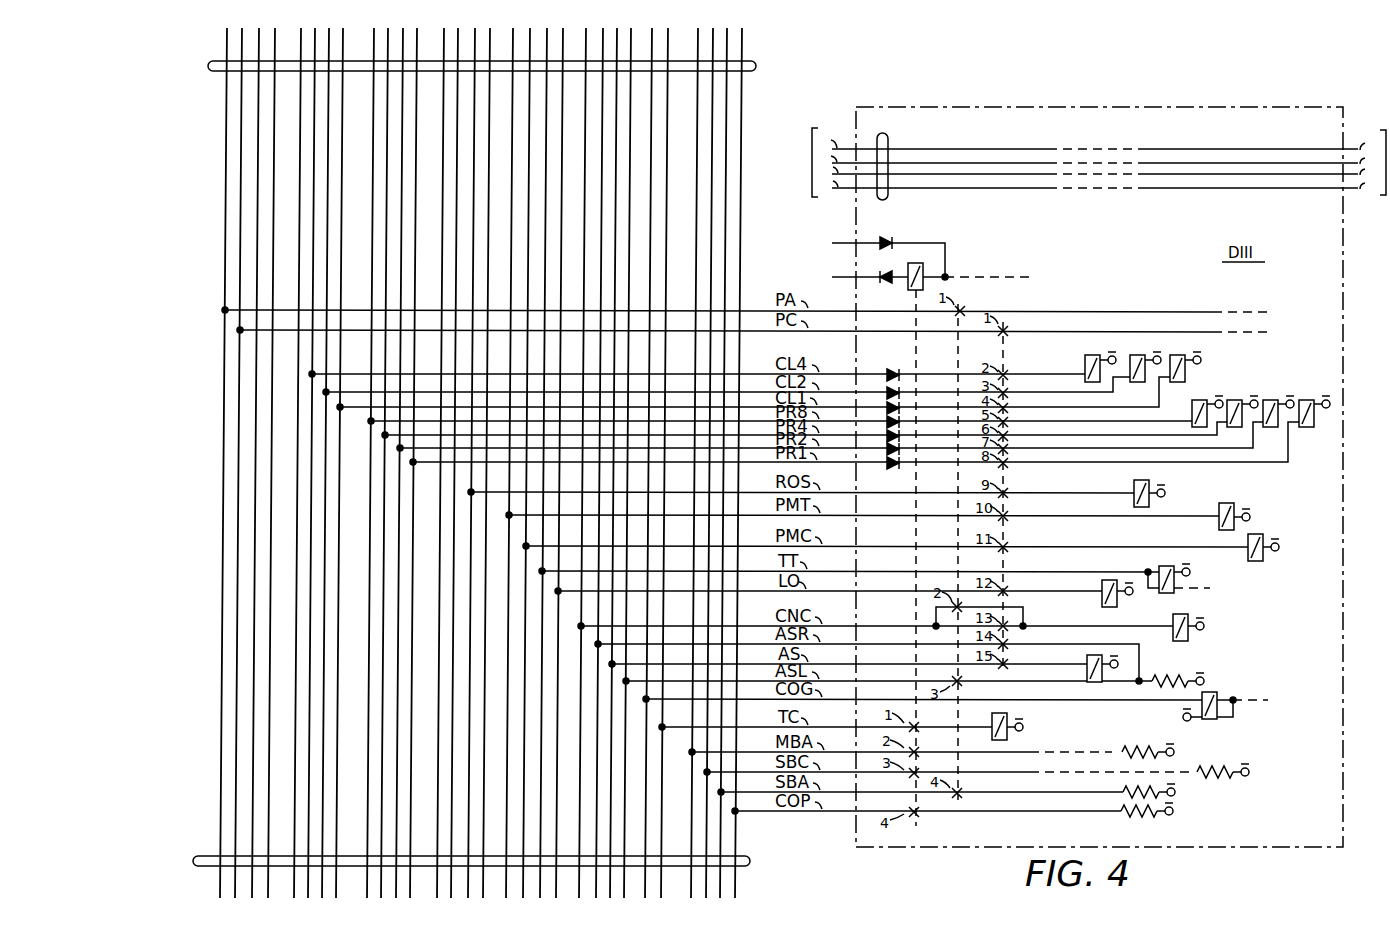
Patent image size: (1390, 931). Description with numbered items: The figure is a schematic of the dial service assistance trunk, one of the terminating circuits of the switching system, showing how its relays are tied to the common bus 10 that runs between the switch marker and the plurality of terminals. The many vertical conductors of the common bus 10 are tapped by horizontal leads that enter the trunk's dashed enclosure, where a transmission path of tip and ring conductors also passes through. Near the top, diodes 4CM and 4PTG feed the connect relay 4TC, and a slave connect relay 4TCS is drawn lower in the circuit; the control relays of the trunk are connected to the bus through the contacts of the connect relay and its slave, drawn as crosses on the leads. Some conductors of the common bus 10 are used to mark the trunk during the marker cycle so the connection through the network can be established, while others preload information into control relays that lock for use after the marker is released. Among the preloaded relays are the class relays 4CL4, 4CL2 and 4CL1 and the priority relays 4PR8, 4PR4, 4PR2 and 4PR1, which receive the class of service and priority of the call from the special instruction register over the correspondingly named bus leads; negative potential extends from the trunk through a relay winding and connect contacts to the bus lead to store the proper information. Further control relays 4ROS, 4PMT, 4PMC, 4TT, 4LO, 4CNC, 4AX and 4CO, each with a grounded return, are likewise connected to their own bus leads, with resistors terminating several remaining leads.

The common bus 10 is at (216, 62).
The diode 4CM is at (832, 243).
The diode 4PTG is at (832, 277).
The connect relay 4TC is at (922, 272).
The control relay 4AX is at (952, 356).
The class relay 4CL4 is at (1090, 356).
The class relay 4CL2 is at (1136, 357).
The class relay 4CL1 is at (1184, 357).
The priority relay 4PR8 is at (1194, 405).
The priority relay 4PR4 is at (1249, 371).
The priority relay 4PR2 is at (1272, 400).
The priority relay 4PR1 is at (1304, 400).
The control relay 4ROS is at (1137, 482).
The control relay 4PMT is at (1230, 504).
The control relay 4PMC is at (1260, 536).
The control relay 4TT is at (1160, 568).
The control relay 4LO is at (1102, 590).
The control relay 4CNC is at (1190, 618).
The control relay 4CO is at (1222, 692).
The slave connect relay 4TCS is at (1010, 720).